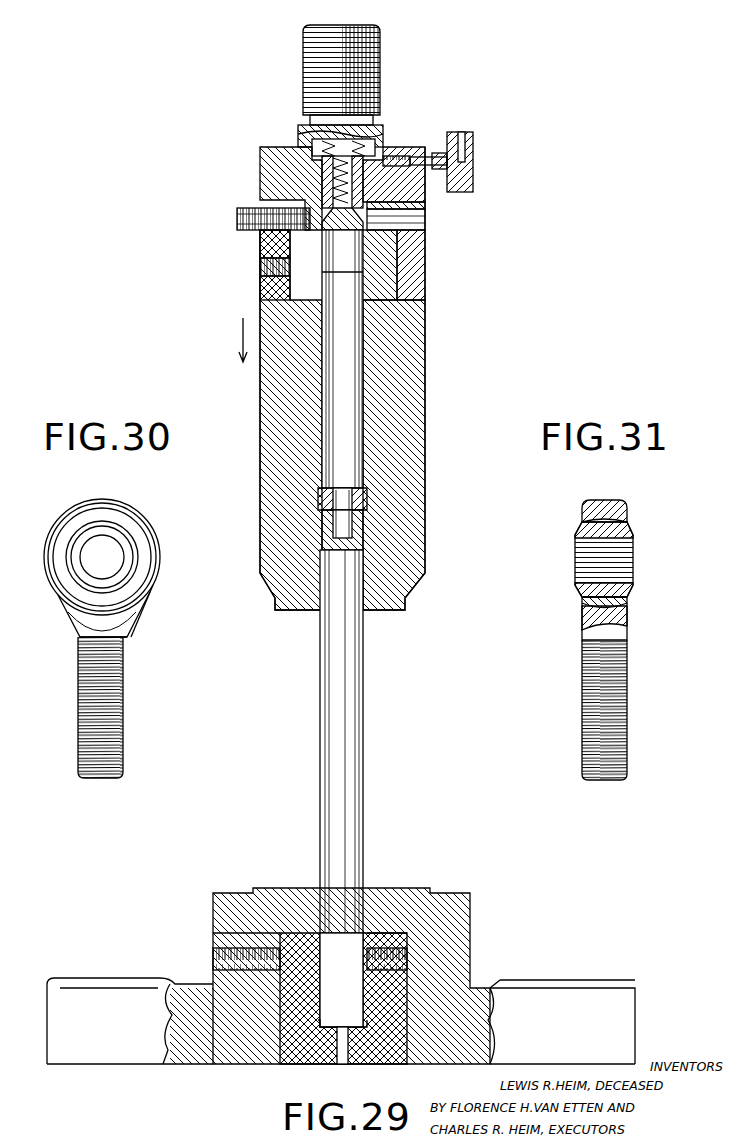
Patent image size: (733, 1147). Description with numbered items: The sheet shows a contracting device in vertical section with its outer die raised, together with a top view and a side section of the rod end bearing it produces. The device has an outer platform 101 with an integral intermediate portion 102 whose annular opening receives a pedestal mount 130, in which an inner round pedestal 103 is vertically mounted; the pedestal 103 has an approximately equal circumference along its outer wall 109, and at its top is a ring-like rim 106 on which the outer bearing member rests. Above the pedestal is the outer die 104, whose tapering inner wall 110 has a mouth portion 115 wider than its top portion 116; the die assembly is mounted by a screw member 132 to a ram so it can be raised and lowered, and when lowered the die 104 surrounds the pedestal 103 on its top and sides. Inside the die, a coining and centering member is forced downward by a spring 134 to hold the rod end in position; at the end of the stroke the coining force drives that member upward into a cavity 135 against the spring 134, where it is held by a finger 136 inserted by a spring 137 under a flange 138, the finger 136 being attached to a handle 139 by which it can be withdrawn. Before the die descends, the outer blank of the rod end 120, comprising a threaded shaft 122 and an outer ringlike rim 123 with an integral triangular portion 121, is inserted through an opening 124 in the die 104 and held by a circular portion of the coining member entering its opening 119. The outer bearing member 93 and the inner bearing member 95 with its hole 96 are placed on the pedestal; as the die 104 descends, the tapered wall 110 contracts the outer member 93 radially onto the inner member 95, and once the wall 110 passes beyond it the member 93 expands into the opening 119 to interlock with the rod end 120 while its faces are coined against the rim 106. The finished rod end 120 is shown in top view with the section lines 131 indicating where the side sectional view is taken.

In FIG. 29, the screw member 132 is at (381, 54).
In FIG. 29, the spring 134 is at (383, 143).
In FIG. 29, the cavity 135 is at (316, 157).
In FIG. 29, the spring 137 is at (408, 156).
In FIG. 29, the flange 138 is at (262, 161).
In FIG. 29, the handle 139 is at (474, 176).
In FIG. 29, the finger 136 is at (382, 165).
In FIG. 29, the opening 124 is at (246, 212).
In FIG. 29, the top portion 116 is at (368, 262).
In FIG. 29, the tapering inner wall 110 is at (367, 463).
In FIG. 29, the ring-like rim 106 is at (364, 518).
In FIG. 29, the outer die 104 is at (427, 536).
In FIG. 29, the mouth portion 115 is at (368, 608).
In FIG. 29, the outer wall 109 is at (366, 830).
In FIG. 29, the intermediate portion 102 is at (471, 954).
In FIG. 29, the outer platform 101 is at (640, 1012).
In FIG. 29, the inner round pedestal 103 is at (328, 1024).
In FIG. 29, the pedestal mount 130 is at (383, 1055).
In FIG. 30, the section lines 131 is at (102, 491).
In FIG. 30, the outer bearing member 93 is at (128, 524).
In FIG. 31, the outer bearing member 93 is at (629, 605).
In FIG. 30, the opening 119 is at (144, 554).
In FIG. 30, the inner bearing member 95 is at (78, 546).
In FIG. 31, the inner bearing member 95 is at (634, 538).
In FIG. 30, the hole 96 is at (118, 571).
In FIG. 30, the outer ringlike rim 123 is at (131, 624).
In FIG. 31, the outer ringlike rim 123 is at (626, 511).
In FIG. 30, the triangular portion 121 is at (128, 632).
In FIG. 31, the triangular portion 121 is at (582, 631).
In FIG. 30, the rod end 120 is at (68, 656).
In FIG. 31, the rod end 120 is at (656, 620).
In FIG. 30, the threaded shaft 122 is at (124, 713).
In FIG. 31, the threaded shaft 122 is at (629, 702).